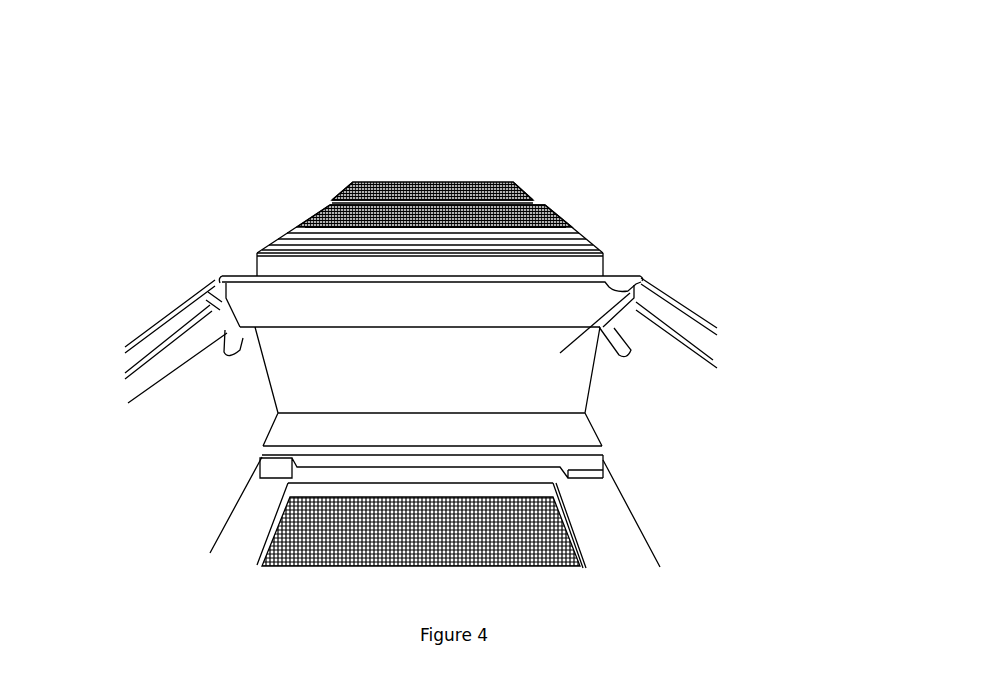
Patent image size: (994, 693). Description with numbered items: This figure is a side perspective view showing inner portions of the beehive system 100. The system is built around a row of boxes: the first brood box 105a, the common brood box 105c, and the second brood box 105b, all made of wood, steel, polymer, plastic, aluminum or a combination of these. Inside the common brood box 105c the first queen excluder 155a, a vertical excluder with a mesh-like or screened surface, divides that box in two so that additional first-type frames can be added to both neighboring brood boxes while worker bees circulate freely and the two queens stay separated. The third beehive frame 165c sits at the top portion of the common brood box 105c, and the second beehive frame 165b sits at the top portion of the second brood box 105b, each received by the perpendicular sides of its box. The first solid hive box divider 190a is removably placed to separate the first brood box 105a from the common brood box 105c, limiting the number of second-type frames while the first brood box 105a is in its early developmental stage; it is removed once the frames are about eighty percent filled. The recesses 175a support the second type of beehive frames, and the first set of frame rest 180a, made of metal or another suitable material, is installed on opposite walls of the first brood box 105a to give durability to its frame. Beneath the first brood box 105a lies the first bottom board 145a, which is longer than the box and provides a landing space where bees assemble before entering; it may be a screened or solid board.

The beehive system 100 is at (112, 145).
The second beehive frame 165b is at (433, 187).
The second brood box 105b is at (517, 193).
The third beehive frame 165c is at (336, 245).
The first queen excluder 155a is at (558, 228).
The common brood box 105c is at (583, 237).
The first solid hive box divider 190a is at (605, 278).
The recess 175a is at (240, 347).
The first set of frame rest 180a is at (183, 342).
The first brood box 105a is at (133, 342).
The first bottom board 145a is at (607, 520).